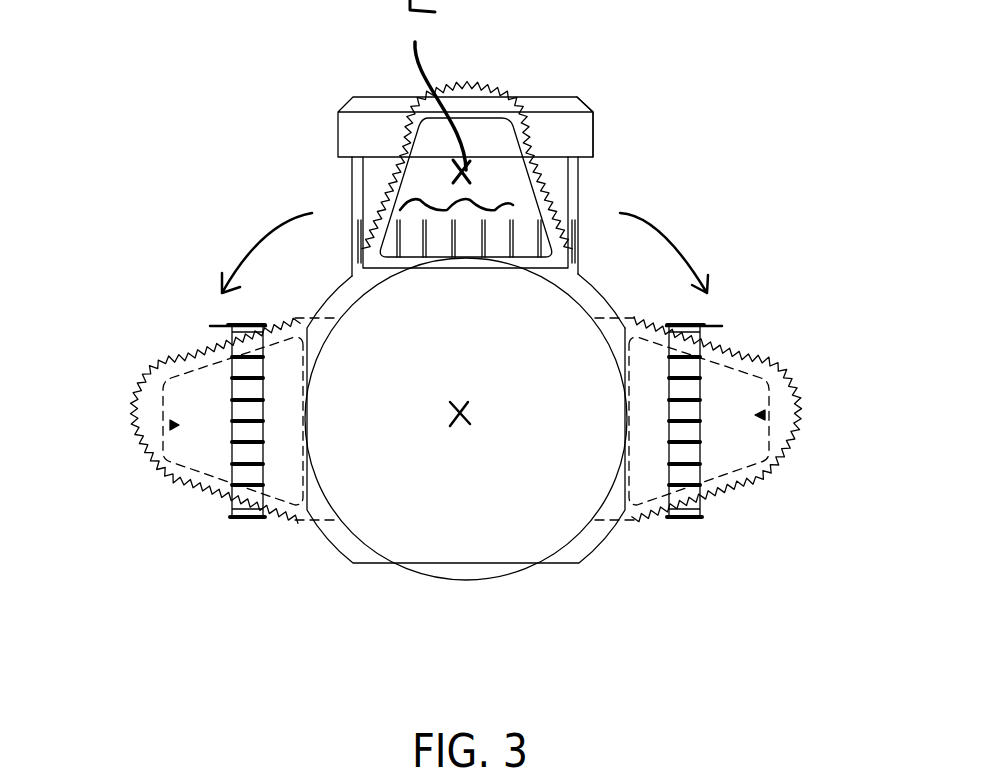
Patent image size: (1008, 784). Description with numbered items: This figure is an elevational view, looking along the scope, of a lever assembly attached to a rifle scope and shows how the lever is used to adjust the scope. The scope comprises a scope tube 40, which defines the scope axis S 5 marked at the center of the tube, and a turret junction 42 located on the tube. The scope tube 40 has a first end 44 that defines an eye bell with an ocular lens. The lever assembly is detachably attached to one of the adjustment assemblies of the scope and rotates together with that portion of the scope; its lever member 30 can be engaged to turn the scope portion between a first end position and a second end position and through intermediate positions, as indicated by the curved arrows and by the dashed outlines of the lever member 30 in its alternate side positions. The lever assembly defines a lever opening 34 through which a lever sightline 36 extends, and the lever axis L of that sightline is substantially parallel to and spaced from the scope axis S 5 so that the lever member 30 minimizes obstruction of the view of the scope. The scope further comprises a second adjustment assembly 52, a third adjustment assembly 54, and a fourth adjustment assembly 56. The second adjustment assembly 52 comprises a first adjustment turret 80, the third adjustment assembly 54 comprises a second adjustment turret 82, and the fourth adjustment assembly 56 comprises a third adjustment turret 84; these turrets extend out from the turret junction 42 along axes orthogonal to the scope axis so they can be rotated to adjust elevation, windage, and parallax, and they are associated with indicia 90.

The scope axis 5 is at (470, 407).
The lever member 30 is at (461, 301).
The lever opening 34 is at (500, 190).
The lever sightline 36 is at (428, 173).
The scope tube 40 is at (380, 582).
The turret junction 42 is at (587, 297).
The first end 44 is at (517, 560).
The second adjustment assembly 52 is at (345, 80).
The third adjustment assembly 54 is at (230, 325).
The fourth adjustment assembly 56 is at (700, 327).
The first adjustment turret 80 is at (580, 128).
The second adjustment turret 82 is at (243, 518).
The third adjustment turret 84 is at (687, 518).
The indicia 90 is at (450, 203).